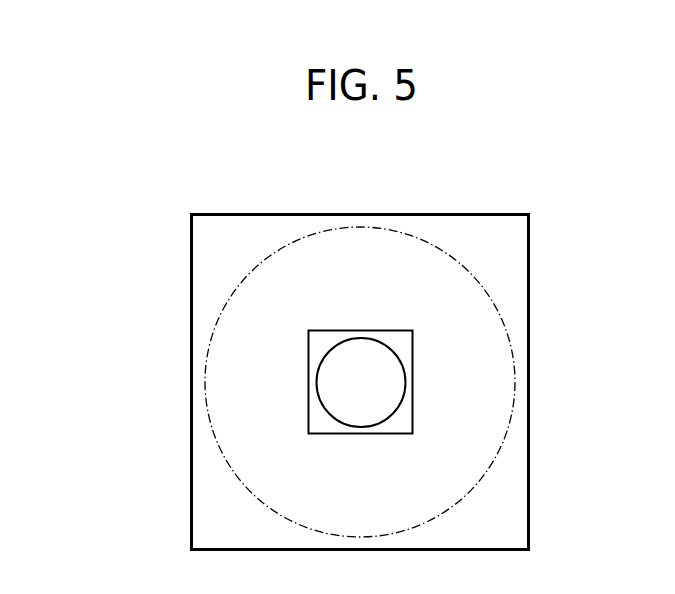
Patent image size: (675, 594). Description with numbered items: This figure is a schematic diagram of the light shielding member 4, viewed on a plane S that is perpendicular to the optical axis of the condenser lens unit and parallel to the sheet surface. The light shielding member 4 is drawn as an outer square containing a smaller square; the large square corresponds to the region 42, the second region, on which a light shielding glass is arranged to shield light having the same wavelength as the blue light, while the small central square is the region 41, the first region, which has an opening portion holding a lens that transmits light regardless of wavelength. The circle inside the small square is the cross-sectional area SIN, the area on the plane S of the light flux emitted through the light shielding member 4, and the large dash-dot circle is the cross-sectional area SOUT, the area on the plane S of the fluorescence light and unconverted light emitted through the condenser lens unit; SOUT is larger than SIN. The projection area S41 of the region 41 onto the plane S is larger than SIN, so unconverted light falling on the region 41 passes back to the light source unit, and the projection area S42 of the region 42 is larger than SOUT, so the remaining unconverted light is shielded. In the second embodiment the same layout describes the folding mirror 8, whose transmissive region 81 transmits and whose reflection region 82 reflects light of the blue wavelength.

The plane S is at (258, 172).
The light shielding member 4 is at (404, 382).
The folding mirror 8 is at (532, 308).
The second region 42 is at (303, 382).
The reflection region 82 is at (220, 255).
The first region 41 is at (348, 357).
The transmissive region 81 is at (331, 338).
The projection area of the first region S41 is at (413, 340).
The projection area of the second region S42 is at (532, 497).
The cross-sectional area of light flux emitted through the light shielding member SIN is at (325, 385).
The cross-sectional area of light flux emitted through the condenser lens unit SOUT is at (515, 380).